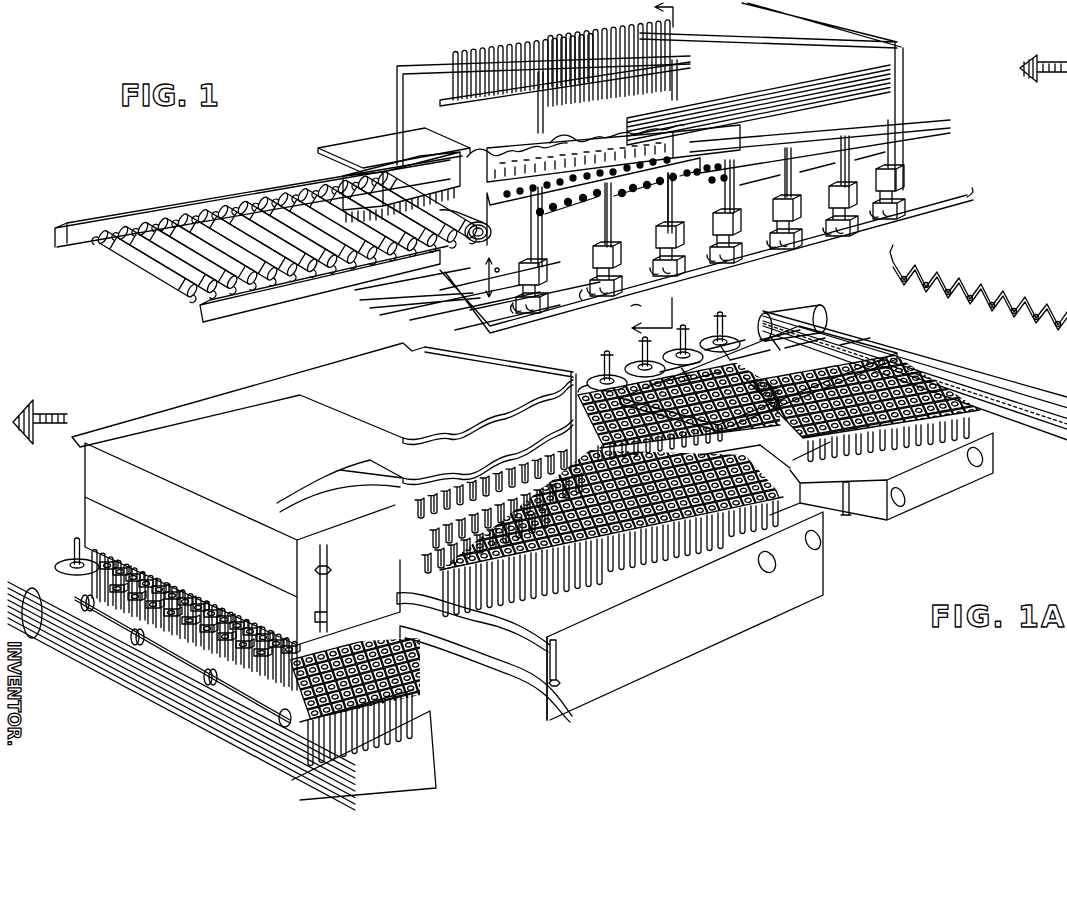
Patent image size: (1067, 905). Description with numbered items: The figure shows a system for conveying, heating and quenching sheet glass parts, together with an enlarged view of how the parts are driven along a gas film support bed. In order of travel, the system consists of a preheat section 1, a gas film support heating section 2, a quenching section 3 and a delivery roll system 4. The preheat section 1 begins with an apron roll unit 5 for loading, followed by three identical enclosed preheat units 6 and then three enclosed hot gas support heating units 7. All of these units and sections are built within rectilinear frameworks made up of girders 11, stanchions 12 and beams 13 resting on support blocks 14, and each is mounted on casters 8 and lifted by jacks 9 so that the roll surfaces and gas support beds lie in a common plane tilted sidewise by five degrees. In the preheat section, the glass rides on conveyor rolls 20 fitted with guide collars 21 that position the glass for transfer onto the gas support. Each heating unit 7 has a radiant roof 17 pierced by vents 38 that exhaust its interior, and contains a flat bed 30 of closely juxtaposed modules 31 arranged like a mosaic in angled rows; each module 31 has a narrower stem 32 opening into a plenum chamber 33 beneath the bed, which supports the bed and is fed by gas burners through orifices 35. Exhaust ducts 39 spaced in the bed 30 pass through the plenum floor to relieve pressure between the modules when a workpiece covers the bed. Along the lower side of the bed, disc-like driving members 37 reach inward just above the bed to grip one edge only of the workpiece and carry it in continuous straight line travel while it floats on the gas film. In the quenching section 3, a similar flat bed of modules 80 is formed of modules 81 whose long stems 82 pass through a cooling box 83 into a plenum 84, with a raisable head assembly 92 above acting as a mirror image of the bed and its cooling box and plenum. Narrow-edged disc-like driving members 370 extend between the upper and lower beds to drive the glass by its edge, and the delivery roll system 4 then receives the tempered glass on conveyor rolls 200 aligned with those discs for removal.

In FIG. 1, the preheat section 1 is at (862, 240).
In FIG. 1, the gas film support heating section 2 is at (638, 172).
In FIG. 1, the quenching section 3 is at (402, 149).
In FIG. 1A, the quenching section 3 is at (262, 384).
In FIG. 1, the delivery roll system 4 is at (296, 292).
In FIG. 1, the apron roll unit 5 is at (930, 145).
In FIG. 1, the preheat unit 6 is at (760, 207).
In FIG. 1, the hot gas support heating unit 7 is at (572, 239).
In FIG. 1, the casters 8 is at (515, 300).
In FIG. 1, the jacks 9 is at (582, 293).
In FIG. 1, the girders 11 is at (705, 84).
In FIG. 1A, the girders 11 is at (792, 466).
In FIG. 1, the stanchions 12 is at (397, 95).
In FIG. 1, the beams 13 is at (397, 66).
In FIG. 1, the support blocks 14 is at (903, 186).
In FIG. 1, the roof 17 is at (1001, 313).
In FIG. 1, the conveyor rolls 20 is at (902, 109).
In FIG. 1A, the conveyor rolls 20 is at (923, 347).
In FIG. 1A, the guide collars 21 is at (802, 334).
In FIG. 1A, the flat bed 30 is at (898, 414).
In FIG. 1A, the modules 31 is at (930, 449).
In FIG. 1A, the stem 32 is at (903, 490).
In FIG. 1A, the plenum chamber 33 is at (878, 518).
In FIG. 1A, the orifices 35 is at (975, 466).
In FIG. 1A, the disc-like driving members 37 is at (595, 378).
In FIG. 1, the vents 38 is at (500, 58).
In FIG. 1A, the exhaust ducts 39 is at (841, 490).
In FIG. 1A, the bed of modules 80 is at (420, 681).
In FIG. 1A, the module 81 is at (608, 590).
In FIG. 1A, the long stem 82 is at (668, 578).
In FIG. 1A, the cooling box 83 is at (507, 635).
In FIG. 1A, the plenum 84 is at (507, 671).
In FIG. 1, the head assembly 92 is at (417, 197).
In FIG. 1A, the head assembly 92 is at (73, 474).
In FIG. 1, the conveyor rolls 200 is at (150, 276).
In FIG. 1A, the disc-like driving members 370 is at (69, 564).